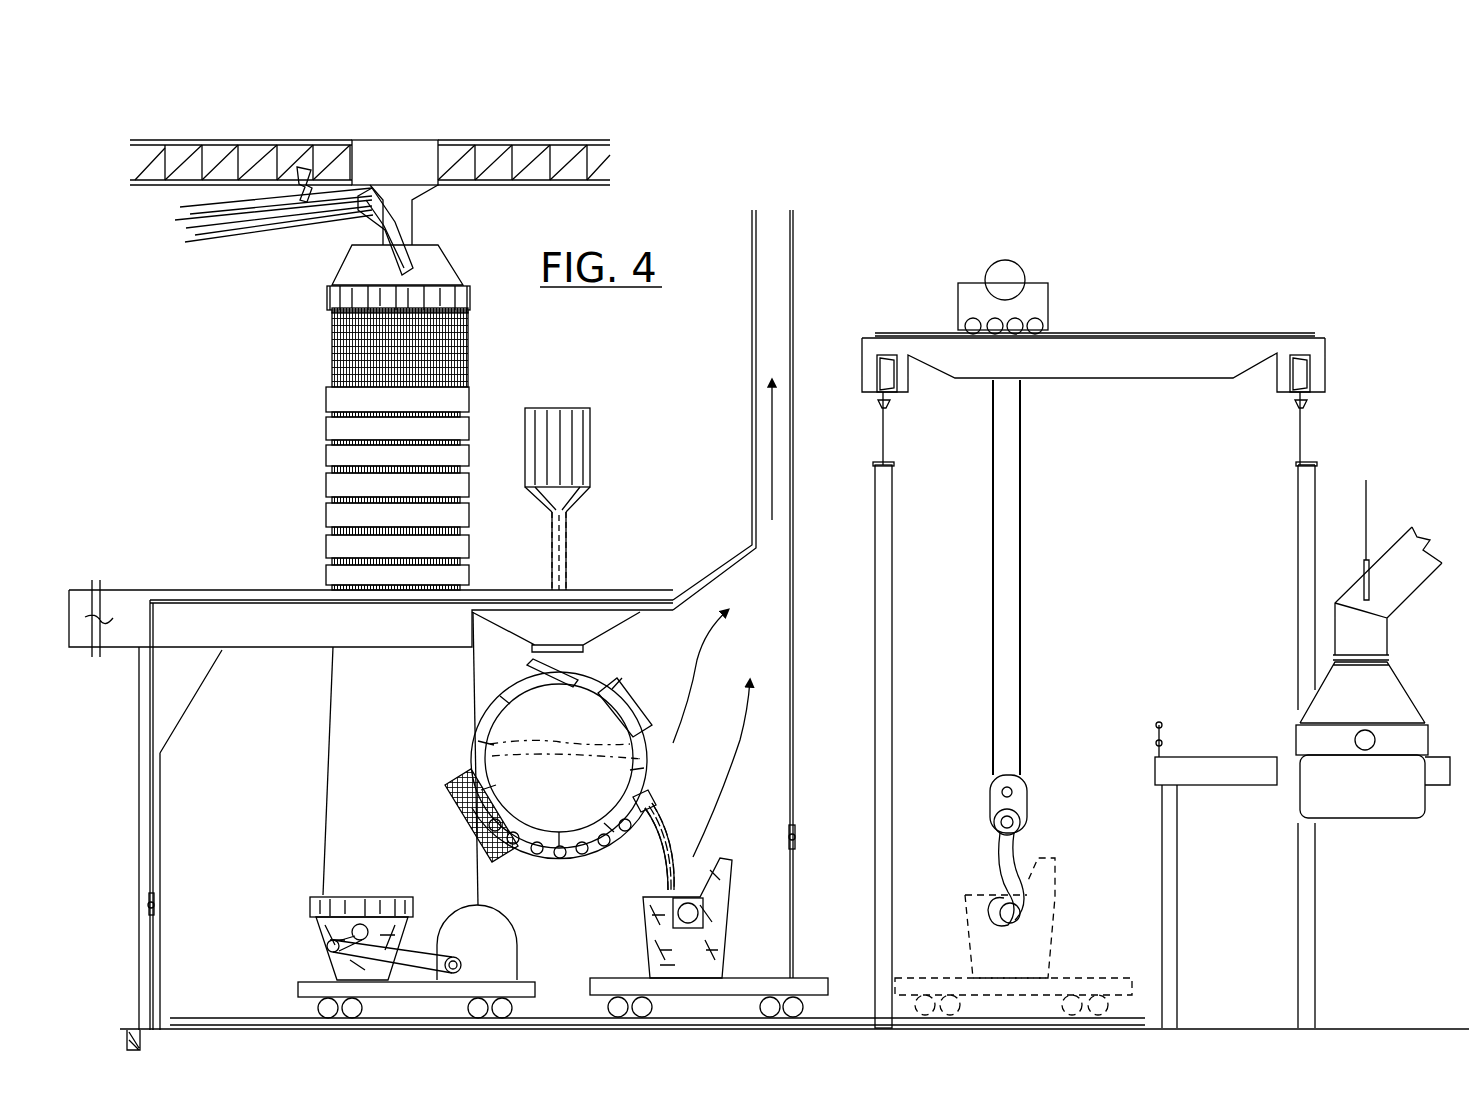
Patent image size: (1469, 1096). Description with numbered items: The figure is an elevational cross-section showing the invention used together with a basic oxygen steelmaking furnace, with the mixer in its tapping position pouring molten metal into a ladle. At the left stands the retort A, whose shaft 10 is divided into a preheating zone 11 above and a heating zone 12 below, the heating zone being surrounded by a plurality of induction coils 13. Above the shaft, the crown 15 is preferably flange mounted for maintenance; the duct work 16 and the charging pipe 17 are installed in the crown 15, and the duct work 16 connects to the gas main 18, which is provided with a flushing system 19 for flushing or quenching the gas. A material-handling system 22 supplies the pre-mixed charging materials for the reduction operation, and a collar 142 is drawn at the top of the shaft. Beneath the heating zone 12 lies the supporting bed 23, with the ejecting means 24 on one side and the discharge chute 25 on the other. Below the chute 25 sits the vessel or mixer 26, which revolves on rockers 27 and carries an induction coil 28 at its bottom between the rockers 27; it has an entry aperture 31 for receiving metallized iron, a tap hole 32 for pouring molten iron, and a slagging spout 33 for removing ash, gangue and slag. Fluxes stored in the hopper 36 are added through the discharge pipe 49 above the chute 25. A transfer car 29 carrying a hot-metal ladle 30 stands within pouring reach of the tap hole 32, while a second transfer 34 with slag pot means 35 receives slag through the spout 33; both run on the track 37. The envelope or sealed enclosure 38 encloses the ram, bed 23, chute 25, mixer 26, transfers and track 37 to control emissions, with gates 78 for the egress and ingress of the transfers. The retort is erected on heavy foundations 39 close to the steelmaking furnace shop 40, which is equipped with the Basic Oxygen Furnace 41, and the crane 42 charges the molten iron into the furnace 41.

The shaft 10 is at (345, 425).
The preheating zone 11 is at (330, 340).
The heating zone 12 is at (333, 471).
The induction coils 13 is at (470, 398).
The furnace top collar 142 is at (327, 300).
The crown 15 is at (440, 266).
The duct work 16 is at (372, 232).
The charging pipe 17 is at (412, 214).
The gas main 18 is at (300, 215).
The flushing system 19 is at (370, 150).
The material-handling system 22 is at (405, 150).
The supporting bed 23 is at (342, 630).
The ejecting means 24 is at (241, 590).
The discharge chute 25 is at (590, 622).
The mixer 26 is at (565, 796).
The rockers 27 is at (600, 848).
The induction coil 28 is at (446, 792).
The transfer car 29 is at (590, 984).
The hot-metal ladle 30 is at (733, 898).
The entry aperture 31 is at (632, 694).
The tap hole 32 is at (650, 798).
The slagging spout 33 is at (527, 668).
The second transfer 34 is at (298, 990).
The slag pot means 35 is at (356, 897).
The hopper 36 is at (590, 446).
The track 37 is at (200, 1018).
The envelope 38 is at (280, 600).
The foundations 39 is at (330, 766).
The steelmaking furnace shop 40 is at (1172, 524).
The Basic Oxygen Furnace 41 is at (1395, 697).
The crane 42 is at (1135, 372).
The discharge pipe 49 is at (566, 541).
The gates 78 is at (150, 905).
The retort A is at (468, 350).